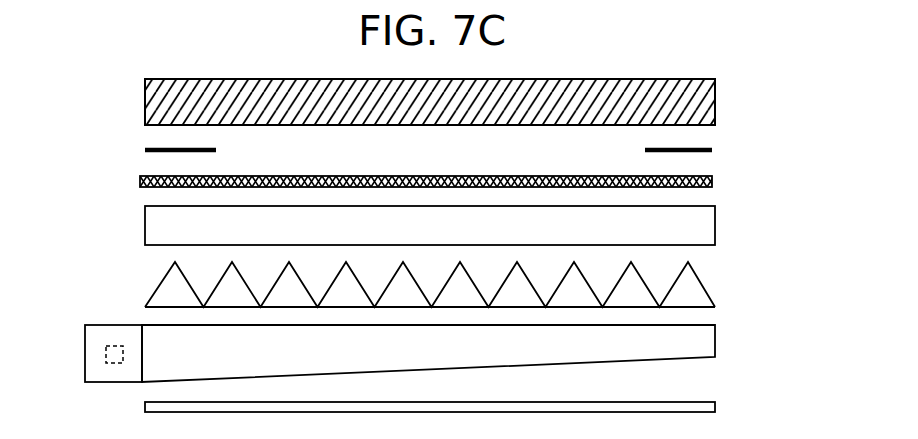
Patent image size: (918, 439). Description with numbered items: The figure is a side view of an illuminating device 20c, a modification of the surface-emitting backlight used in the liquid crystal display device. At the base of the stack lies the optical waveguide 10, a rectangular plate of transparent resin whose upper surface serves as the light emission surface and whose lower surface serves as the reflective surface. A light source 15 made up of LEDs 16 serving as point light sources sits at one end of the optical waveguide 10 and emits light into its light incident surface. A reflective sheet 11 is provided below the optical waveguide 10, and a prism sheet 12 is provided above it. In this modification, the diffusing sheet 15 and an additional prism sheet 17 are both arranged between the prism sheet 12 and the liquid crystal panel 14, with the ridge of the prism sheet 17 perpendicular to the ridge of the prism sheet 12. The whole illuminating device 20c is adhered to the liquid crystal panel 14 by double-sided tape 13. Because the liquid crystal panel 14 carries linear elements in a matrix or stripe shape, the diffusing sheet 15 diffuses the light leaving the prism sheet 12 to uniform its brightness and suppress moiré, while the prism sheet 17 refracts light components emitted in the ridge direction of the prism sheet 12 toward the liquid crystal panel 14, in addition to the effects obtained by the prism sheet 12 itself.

The optical waveguide 10 is at (705, 336).
The reflective sheet 11 is at (712, 404).
The prism sheet 12 is at (705, 285).
The double-sided tape 13 is at (147, 150).
The liquid crystal panel 14 is at (715, 108).
The diffusing sheet 15 is at (712, 180).
The LED 16 is at (105, 347).
The prism sheet 17 is at (715, 222).
The illuminating device 20c is at (795, 174).